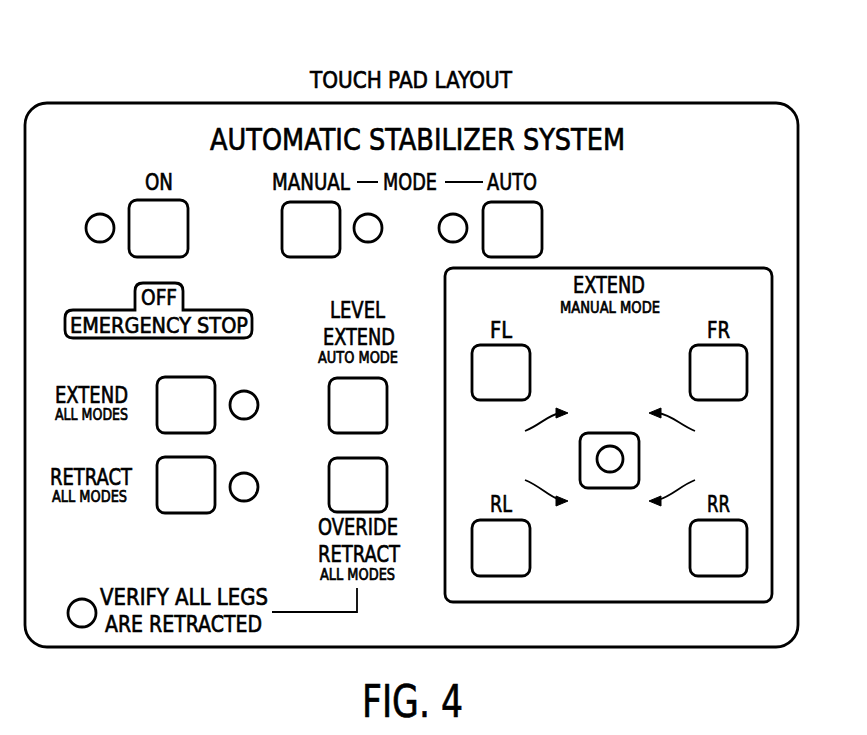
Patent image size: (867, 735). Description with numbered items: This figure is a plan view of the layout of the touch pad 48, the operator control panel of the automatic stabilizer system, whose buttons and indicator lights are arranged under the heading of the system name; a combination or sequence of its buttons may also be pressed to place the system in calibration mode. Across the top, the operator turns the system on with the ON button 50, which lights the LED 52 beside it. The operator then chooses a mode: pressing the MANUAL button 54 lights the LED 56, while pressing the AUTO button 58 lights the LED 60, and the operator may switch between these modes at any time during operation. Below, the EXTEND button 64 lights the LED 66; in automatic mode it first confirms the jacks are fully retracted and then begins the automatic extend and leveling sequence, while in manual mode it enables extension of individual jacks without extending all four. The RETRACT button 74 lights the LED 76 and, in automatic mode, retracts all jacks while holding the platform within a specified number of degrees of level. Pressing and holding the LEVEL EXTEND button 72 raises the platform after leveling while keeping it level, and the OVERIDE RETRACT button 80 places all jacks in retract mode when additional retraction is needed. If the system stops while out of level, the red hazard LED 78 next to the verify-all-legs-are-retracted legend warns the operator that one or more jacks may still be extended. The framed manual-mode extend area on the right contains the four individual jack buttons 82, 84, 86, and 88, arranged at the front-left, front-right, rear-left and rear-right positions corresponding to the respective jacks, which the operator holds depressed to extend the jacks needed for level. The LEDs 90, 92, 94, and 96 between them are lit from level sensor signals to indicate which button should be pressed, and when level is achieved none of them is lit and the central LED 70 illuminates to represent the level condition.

The touch pad 48 is at (733, 82).
The ON button 50 is at (131, 201).
The LED 52 is at (86, 228).
The MANUAL button 54 is at (282, 215).
The LED 56 is at (372, 241).
The AUTO button 58 is at (542, 230).
The LED 60 is at (449, 216).
The EXTEND button 64 is at (184, 377).
The LED 66 is at (247, 418).
The LED 70 is at (620, 449).
The LEVEL EXTEND button 72 is at (329, 405).
The RETRACT button 74 is at (183, 513).
The LED 76 is at (240, 501).
The red hazard LED 78 is at (80, 599).
The OVERIDE RETRACT button 80 is at (329, 485).
The individual jack button 82 is at (530, 372).
The individual jack button 84 is at (690, 372).
The individual jack button 86 is at (530, 548).
The individual jack button 88 is at (690, 548).
The LED 90 is at (533, 425).
The LED 92 is at (685, 425).
The LED 94 is at (533, 485).
The LED 96 is at (685, 485).